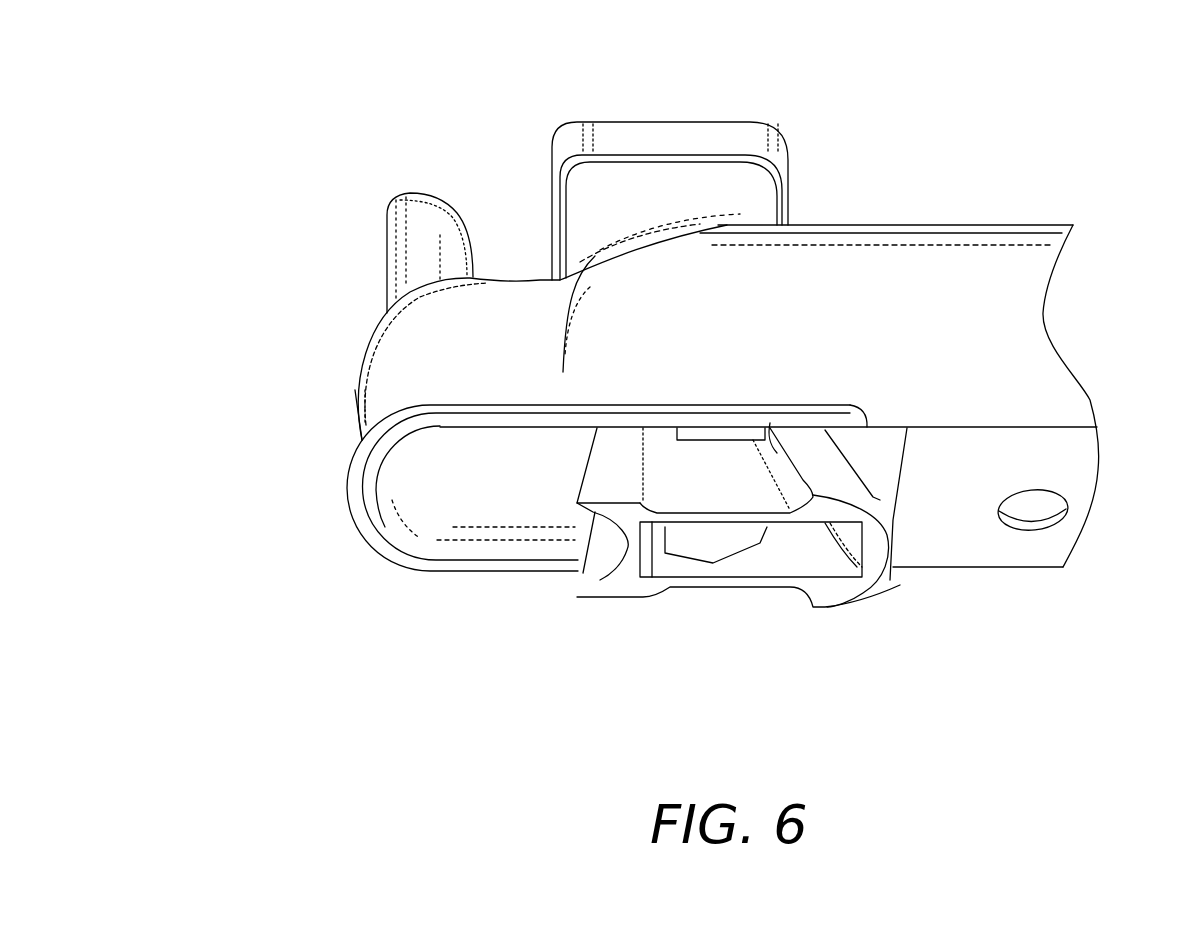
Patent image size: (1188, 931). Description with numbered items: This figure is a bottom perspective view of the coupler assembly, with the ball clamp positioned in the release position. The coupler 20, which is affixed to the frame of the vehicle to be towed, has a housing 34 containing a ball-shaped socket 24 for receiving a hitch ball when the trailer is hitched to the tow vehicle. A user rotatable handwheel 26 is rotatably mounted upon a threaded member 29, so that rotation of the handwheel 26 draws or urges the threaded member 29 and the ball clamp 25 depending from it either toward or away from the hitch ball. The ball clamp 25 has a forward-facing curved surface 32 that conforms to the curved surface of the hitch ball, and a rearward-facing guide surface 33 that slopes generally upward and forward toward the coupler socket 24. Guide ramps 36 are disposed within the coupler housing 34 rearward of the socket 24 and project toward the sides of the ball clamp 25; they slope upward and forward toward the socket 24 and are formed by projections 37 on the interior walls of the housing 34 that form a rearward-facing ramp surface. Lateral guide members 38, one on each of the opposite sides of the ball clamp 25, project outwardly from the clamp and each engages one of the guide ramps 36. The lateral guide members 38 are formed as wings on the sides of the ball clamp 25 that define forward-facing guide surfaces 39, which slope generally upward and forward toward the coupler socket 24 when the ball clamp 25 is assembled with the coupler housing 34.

The coupler 20 is at (322, 358).
The socket 24 is at (353, 483).
The ball clamp 25 is at (643, 597).
The handwheel 26 is at (660, 130).
The threaded member 29 is at (697, 548).
The forward-facing curved surface 32 is at (610, 568).
The rearward-facing guide surface 33 is at (877, 497).
The housing 34 is at (937, 225).
The guide ramps 36 is at (770, 423).
The projections 37 is at (723, 433).
The lateral guide members 38 is at (823, 592).
The forward-facing guide surfaces 39 is at (790, 485).